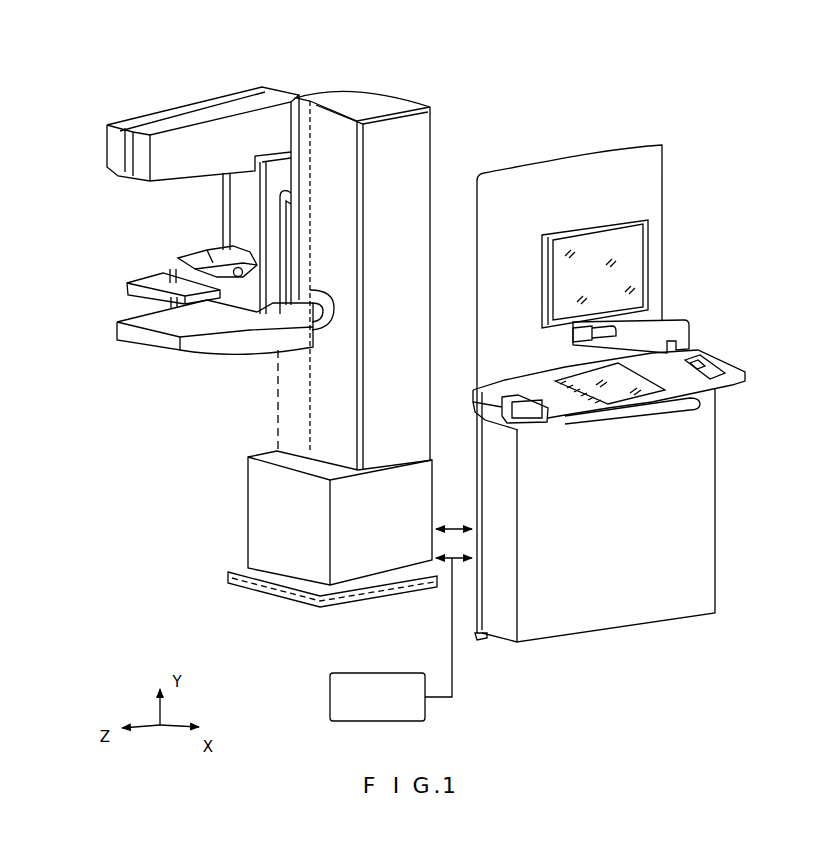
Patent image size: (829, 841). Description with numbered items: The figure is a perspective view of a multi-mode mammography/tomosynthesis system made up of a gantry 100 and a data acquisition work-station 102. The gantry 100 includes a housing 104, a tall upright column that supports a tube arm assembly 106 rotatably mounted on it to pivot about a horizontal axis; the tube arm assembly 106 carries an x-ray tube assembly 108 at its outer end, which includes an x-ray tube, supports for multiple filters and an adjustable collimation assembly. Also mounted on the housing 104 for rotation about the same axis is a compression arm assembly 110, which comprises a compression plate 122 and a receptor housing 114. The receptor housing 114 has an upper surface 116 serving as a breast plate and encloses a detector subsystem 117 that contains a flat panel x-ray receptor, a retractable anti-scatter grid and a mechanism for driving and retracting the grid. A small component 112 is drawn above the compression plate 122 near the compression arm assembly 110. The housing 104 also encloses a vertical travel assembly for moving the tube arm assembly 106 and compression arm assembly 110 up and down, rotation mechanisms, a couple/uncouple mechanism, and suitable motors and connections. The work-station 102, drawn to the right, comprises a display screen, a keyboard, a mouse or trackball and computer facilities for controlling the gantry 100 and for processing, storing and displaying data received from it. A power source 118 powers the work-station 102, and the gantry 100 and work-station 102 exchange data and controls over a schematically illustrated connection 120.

The gantry 100 is at (397, 46).
The data acquisition work-station 102 is at (615, 131).
The housing 104 is at (417, 96).
The tube arm assembly 106 is at (289, 83).
The x-ray tube assembly 108 is at (131, 186).
The compression arm assembly 110 is at (81, 272).
The compression mechanism 112 is at (165, 251).
The receptor housing 114 is at (117, 326).
The upper surface 116 is at (132, 317).
The detector subsystem 117 is at (140, 368).
The power source 118 is at (328, 700).
The connection 120 is at (447, 527).
The compression plate 122 is at (140, 276).